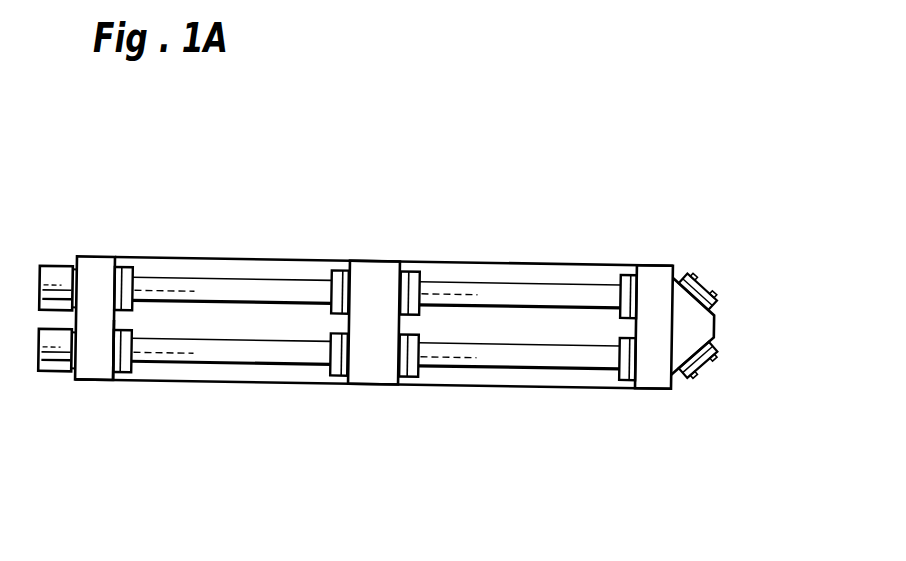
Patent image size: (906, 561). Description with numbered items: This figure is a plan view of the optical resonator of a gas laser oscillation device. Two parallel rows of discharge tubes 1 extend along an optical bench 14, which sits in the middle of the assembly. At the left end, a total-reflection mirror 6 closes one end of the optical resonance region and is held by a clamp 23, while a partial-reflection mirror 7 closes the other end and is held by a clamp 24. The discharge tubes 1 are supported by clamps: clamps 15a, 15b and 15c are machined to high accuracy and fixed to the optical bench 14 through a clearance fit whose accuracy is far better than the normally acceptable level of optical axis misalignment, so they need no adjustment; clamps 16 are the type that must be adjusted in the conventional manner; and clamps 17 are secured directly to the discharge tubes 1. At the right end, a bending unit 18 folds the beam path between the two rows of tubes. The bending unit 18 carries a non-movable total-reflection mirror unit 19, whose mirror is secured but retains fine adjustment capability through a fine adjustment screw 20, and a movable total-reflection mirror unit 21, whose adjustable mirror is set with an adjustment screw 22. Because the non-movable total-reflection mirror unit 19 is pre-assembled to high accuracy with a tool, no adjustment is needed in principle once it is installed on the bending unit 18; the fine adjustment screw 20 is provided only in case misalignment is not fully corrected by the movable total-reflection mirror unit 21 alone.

The discharge tube 1 is at (217, 270).
The total-reflection mirror 6 is at (50, 372).
The partial-reflection mirror 7 is at (50, 267).
The optical bench 14 is at (372, 385).
The clamp 15a is at (115, 262).
The clamp 15b is at (630, 270).
The clamp 15c is at (115, 380).
The clamp 16 is at (342, 270).
The clamp 17 is at (133, 262).
The bending unit 18 is at (718, 323).
The non-movable total-reflection mirror unit 19 is at (720, 270).
The fine adjustment screw 20 is at (697, 273).
The movable total-reflection mirror unit 21 is at (703, 380).
The adjustment screw 22 is at (717, 363).
The clamp 23 is at (70, 380).
The clamp 24 is at (68, 265).